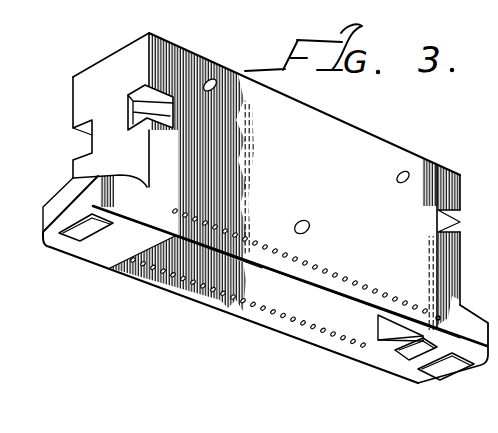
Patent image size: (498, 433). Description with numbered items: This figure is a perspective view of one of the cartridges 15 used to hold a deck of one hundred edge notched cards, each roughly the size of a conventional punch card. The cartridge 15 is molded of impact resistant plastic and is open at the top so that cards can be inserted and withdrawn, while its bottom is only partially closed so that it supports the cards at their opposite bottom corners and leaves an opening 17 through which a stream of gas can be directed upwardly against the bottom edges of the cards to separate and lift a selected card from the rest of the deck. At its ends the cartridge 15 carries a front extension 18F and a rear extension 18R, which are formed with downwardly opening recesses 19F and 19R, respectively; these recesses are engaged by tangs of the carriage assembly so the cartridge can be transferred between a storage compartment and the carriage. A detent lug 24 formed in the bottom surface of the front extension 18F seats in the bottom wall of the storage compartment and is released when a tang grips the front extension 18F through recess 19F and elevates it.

The cartridge 15 is at (363, 157).
The opening 17 is at (196, 261).
The rear extension 18R is at (64, 205).
The front extension 18F is at (477, 333).
The recess 19R is at (84, 228).
The recess 19F is at (450, 368).
The detent lug 24 is at (412, 358).